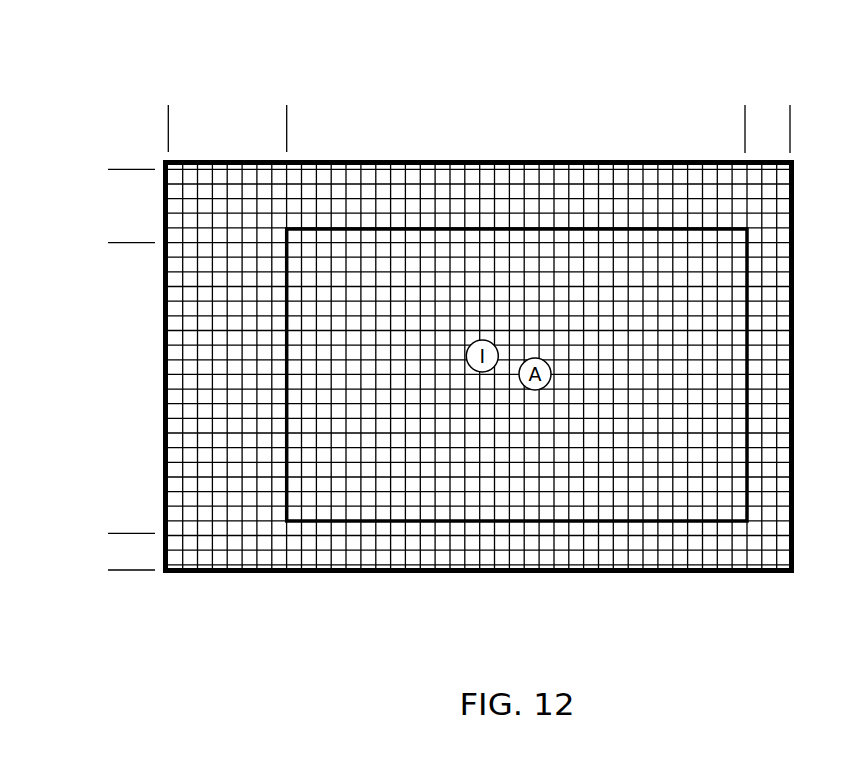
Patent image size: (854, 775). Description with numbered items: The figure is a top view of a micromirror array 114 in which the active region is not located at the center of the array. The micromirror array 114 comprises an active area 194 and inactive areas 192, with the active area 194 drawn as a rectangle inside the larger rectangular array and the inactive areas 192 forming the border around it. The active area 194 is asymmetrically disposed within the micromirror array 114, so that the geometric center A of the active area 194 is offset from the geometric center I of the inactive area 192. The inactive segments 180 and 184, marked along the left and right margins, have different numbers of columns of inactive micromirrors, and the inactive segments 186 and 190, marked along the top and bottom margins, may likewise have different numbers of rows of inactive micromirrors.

The micromirror array 114 is at (400, 86).
The inactive segment 180 is at (170, 128).
The inactive segment 184 is at (817, 128).
The inactive segment 186 is at (133, 171).
The inactive segment 190 is at (133, 512).
The inactive area 192 is at (390, 573).
The active area 194 is at (517, 523).